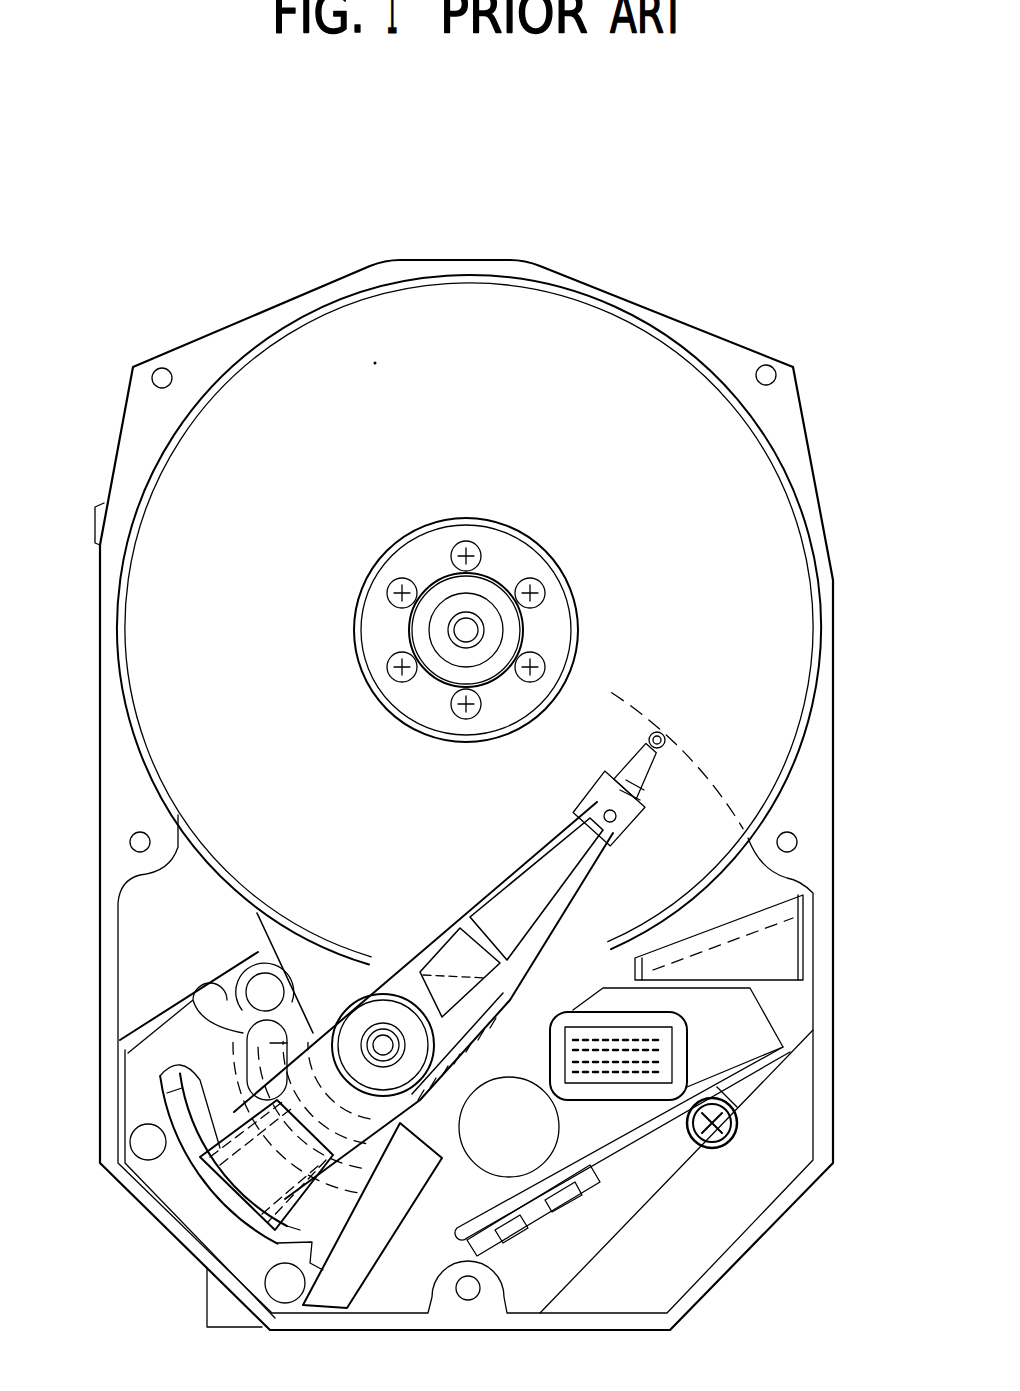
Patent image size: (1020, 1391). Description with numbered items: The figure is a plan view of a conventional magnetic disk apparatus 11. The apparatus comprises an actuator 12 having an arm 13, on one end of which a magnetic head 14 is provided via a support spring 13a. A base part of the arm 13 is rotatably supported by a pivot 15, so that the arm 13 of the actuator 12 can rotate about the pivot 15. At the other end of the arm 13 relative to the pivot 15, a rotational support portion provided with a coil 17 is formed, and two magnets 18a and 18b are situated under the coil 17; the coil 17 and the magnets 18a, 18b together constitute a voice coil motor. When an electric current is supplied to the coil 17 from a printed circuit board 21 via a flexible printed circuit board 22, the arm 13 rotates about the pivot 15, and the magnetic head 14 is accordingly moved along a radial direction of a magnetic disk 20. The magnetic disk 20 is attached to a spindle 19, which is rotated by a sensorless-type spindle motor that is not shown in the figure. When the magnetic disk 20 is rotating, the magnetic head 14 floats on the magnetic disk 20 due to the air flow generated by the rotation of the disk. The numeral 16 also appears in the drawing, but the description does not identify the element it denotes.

The magnetic disk apparatus 11 is at (478, 163).
The actuator 12 is at (417, 1117).
The arm 13 is at (573, 907).
The support spring 13a is at (643, 783).
The magnetic head 14 is at (667, 730).
The pivot 15 is at (385, 1040).
The yoke 16 is at (236, 1124).
The coil 17 is at (372, 1205).
The magnet 18a is at (172, 1103).
The magnet 18b is at (195, 987).
The spindle 19 is at (483, 630).
The magnetic disk 20 is at (783, 607).
The printed circuit board 21 is at (647, 1127).
The flexible printed circuit board 22 is at (537, 1100).